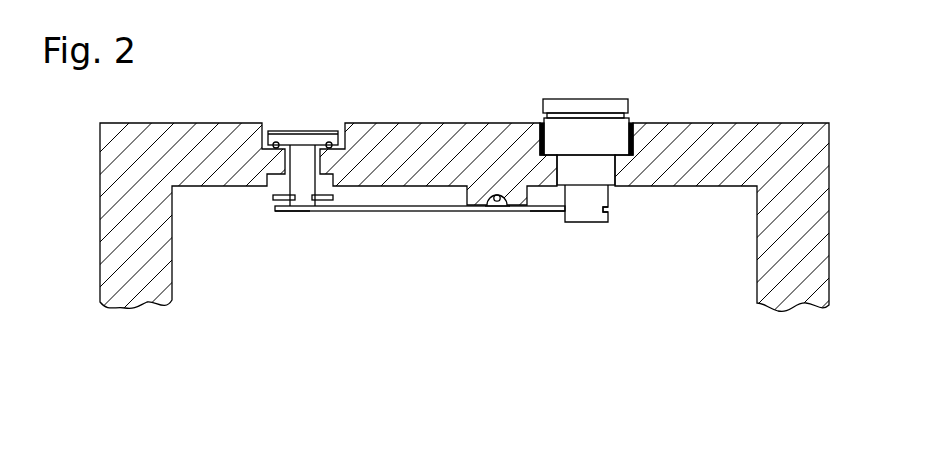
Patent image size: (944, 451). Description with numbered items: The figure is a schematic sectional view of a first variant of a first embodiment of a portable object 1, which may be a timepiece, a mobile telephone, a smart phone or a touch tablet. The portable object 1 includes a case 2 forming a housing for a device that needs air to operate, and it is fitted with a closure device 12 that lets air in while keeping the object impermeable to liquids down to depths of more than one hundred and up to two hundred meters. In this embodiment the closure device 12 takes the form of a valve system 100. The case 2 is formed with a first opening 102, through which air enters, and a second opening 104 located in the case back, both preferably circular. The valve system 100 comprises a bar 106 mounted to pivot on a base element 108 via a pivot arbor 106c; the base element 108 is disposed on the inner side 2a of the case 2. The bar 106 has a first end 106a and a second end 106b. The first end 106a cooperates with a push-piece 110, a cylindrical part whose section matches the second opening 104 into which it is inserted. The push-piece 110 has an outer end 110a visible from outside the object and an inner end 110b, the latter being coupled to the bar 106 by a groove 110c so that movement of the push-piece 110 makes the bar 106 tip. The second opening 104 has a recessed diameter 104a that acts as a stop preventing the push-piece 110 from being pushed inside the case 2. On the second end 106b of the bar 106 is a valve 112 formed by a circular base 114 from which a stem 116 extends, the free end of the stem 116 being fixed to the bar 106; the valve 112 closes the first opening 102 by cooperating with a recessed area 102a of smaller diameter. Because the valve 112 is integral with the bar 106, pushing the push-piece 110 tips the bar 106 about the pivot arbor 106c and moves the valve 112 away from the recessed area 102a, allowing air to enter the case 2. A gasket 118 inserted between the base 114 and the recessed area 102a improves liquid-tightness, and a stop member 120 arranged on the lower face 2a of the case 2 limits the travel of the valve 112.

The portable object 1 is at (832, 84).
The case 2 is at (153, 132).
The inner side 2a is at (172, 263).
The closure device 12 is at (265, 102).
The valve system 100 is at (397, 224).
The first opening 102 is at (326, 124).
The recessed area 102a is at (333, 160).
The second opening 104 is at (634, 134).
The recessed diameter 104a is at (617, 170).
The bar 106 is at (455, 214).
The first end 106a is at (547, 212).
The second end 106b is at (295, 211).
The pivot arbor 106c is at (497, 200).
The base element 108 is at (498, 195).
The push-piece 110 is at (622, 96).
The outer end 110a is at (590, 99).
The inner end 110b is at (608, 223).
The groove 110c is at (610, 209).
The valve 112 is at (298, 122).
The circular base 114 is at (330, 143).
The stem 116 is at (297, 162).
The gasket 118 is at (263, 146).
The stop member 120 is at (273, 196).